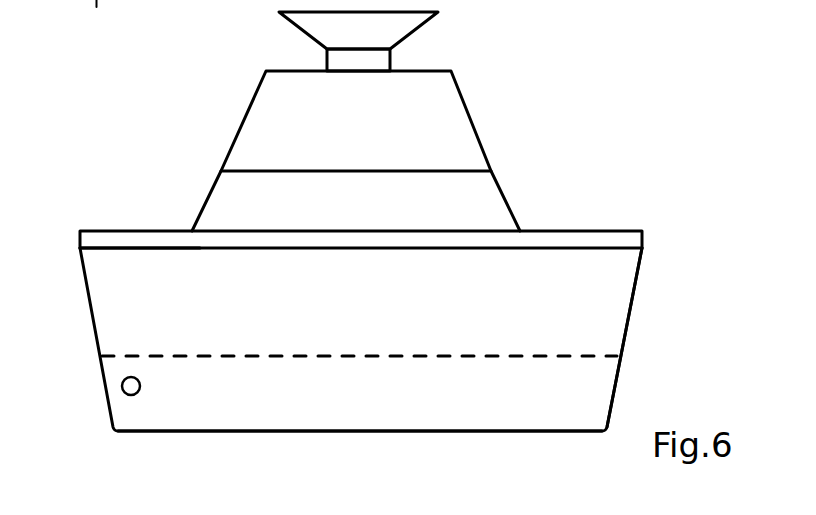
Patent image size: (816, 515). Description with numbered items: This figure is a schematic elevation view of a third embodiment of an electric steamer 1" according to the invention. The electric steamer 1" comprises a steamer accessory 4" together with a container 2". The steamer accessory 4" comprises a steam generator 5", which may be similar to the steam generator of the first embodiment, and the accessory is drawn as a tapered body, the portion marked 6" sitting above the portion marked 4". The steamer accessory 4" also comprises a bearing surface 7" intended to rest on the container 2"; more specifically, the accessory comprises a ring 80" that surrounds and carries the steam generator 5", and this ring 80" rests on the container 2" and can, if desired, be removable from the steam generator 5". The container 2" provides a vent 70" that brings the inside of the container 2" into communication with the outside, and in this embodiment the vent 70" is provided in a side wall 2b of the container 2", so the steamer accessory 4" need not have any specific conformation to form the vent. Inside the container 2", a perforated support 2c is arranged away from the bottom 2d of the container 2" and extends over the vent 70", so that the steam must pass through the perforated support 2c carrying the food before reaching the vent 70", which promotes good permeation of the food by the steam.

The electric steamer 1 is at (373, 263).
The container 2 is at (620, 378).
The side wall 2b is at (637, 277).
The perforated support 2c is at (138, 355).
The bottom 2d is at (347, 428).
The steamer accessory 4 is at (493, 167).
The steam generator 5 is at (358, 151).
The upper superstructure section 6 is at (467, 142).
The bearing surface 7 is at (563, 265).
The vent 70 is at (131, 386).
The ring 80 is at (125, 248).